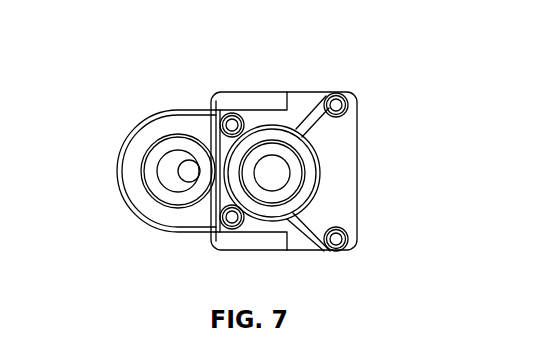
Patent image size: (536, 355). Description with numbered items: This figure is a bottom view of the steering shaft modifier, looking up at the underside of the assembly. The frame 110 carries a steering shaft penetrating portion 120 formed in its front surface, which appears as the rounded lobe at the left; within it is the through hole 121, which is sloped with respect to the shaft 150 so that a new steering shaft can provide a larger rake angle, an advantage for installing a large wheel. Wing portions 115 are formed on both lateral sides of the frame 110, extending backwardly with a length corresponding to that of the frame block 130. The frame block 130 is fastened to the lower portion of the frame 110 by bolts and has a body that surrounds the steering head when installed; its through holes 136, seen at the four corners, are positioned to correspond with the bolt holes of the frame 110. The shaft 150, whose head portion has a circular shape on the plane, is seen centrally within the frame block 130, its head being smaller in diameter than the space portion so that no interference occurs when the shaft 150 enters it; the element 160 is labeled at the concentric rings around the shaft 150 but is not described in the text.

The frame 110 is at (191, 131).
The wing portions 115 is at (235, 92).
The steering shaft penetrating portion 120 is at (131, 113).
The through hole 121 is at (140, 176).
The frame block 130 is at (333, 159).
The through holes 136 is at (348, 253).
The shaft 150 is at (287, 148).
The bearing 160 is at (272, 124).